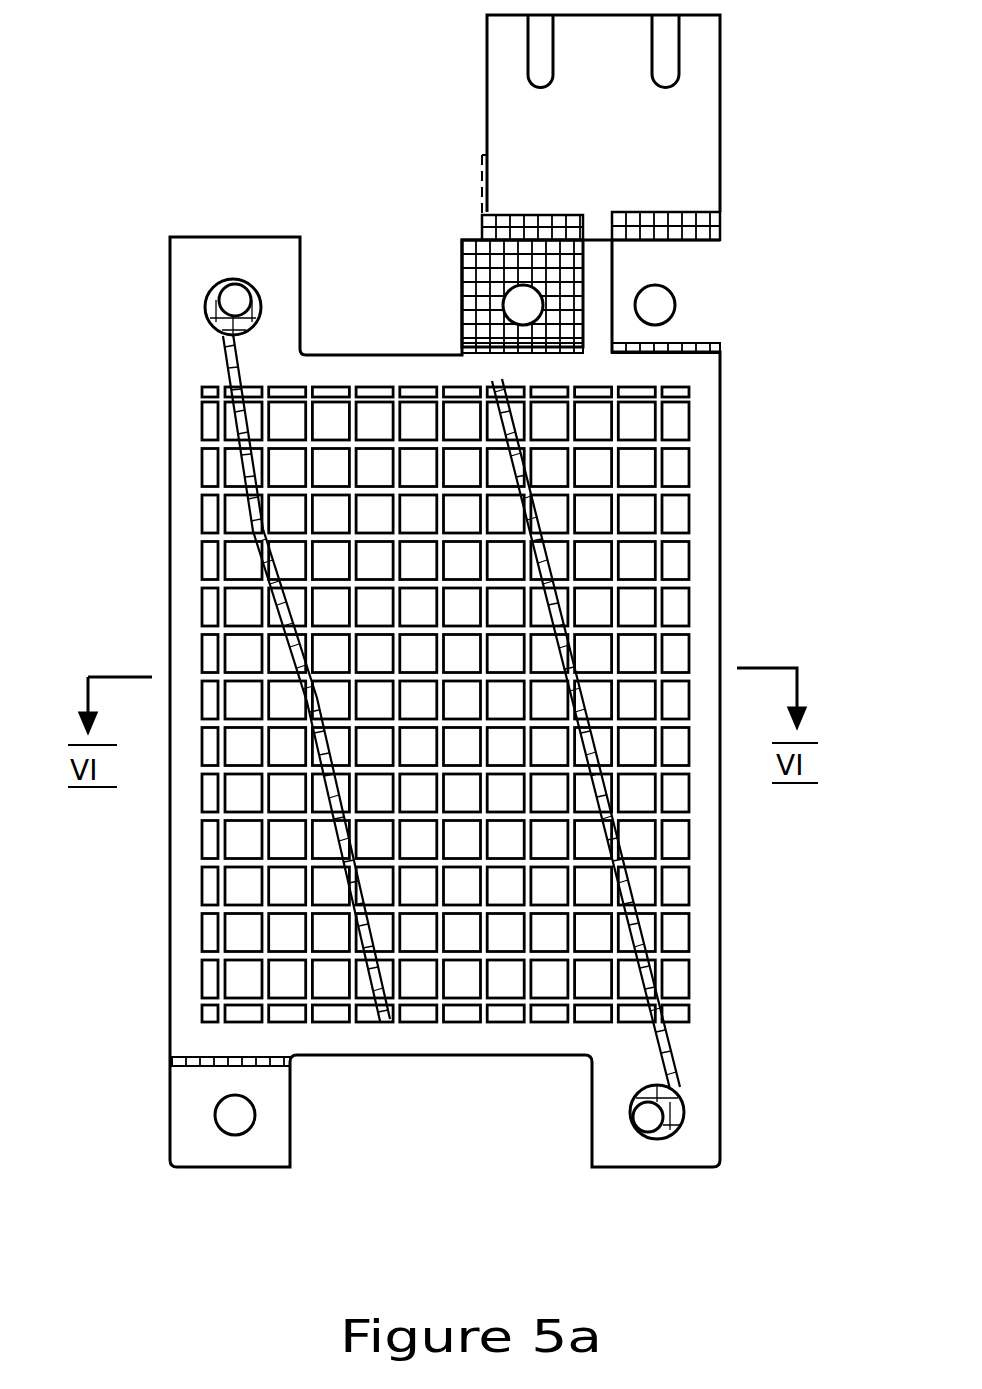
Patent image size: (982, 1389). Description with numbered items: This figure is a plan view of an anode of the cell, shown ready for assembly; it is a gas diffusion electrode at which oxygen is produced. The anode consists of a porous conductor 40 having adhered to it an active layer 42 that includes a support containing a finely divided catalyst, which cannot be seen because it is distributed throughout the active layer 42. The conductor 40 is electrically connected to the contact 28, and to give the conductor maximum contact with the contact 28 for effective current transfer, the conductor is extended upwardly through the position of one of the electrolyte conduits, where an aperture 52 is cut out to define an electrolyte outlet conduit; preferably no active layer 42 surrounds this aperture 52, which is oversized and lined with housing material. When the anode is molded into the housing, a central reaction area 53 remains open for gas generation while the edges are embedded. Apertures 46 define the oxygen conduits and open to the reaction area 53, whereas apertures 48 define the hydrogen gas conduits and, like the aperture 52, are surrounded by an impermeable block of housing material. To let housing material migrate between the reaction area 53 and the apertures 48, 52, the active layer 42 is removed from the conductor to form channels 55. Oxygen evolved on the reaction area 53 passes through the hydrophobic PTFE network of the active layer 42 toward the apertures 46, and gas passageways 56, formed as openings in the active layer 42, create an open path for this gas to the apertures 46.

The contact 28 is at (692, 123).
The porous conductor 40 is at (708, 226).
The active layer 42 is at (682, 627).
The apertures 46 is at (253, 283).
The apertures 48 is at (665, 306).
The aperture 52 is at (520, 306).
The central reaction area 53 is at (570, 542).
The channels 55 is at (500, 228).
The gas passageways 56 is at (608, 897).